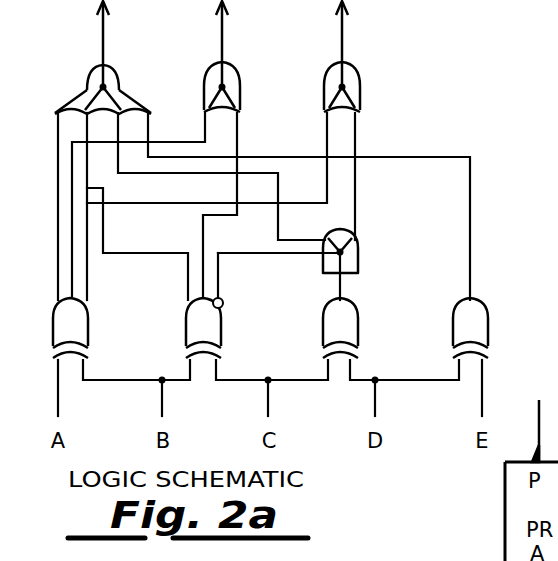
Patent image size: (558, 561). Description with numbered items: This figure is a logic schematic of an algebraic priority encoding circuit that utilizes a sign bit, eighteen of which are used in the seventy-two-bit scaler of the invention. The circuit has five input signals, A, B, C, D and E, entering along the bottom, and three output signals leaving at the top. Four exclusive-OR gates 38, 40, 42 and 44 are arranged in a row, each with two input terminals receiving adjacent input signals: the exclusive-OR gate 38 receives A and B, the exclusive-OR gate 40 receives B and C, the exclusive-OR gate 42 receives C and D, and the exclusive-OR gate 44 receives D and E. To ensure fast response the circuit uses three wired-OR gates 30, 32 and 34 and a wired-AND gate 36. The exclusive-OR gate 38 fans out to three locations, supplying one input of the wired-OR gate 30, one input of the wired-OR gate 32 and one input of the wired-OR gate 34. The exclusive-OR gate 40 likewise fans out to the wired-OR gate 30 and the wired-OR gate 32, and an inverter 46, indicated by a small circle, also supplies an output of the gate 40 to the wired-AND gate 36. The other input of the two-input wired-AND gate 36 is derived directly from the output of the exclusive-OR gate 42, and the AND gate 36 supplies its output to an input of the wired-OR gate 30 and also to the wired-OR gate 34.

The wired-OR gate 30 is at (88, 88).
The wired-OR gate 32 is at (204, 86).
The wired-OR gate 34 is at (325, 86).
The wired-AND gate 36 is at (358, 252).
The exclusive-OR gate 38 is at (88, 318).
The exclusive-OR gate 40 is at (222, 324).
The exclusive-OR gate 42 is at (358, 318).
The exclusive-OR gate 44 is at (488, 318).
The inverter 46 is at (224, 304).